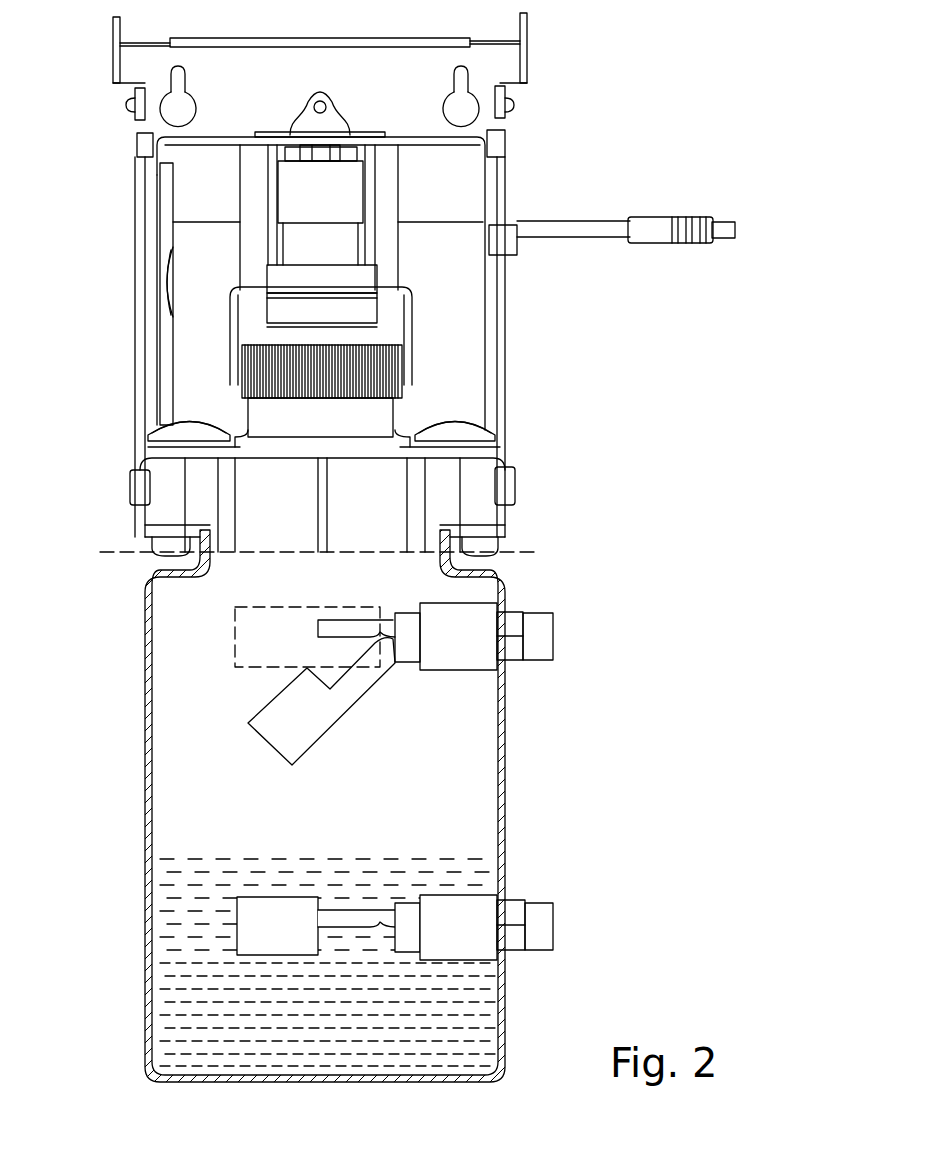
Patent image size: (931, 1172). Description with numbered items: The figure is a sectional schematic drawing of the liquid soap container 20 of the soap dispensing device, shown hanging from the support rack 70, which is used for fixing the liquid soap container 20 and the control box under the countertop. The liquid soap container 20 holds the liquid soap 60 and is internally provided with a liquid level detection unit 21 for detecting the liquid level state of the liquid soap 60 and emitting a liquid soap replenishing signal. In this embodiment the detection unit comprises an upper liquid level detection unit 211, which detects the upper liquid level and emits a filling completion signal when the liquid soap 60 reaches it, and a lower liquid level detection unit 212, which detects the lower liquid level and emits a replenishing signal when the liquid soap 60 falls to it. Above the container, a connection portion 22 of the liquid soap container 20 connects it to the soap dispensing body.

The support rack 70 is at (488, 70).
The connection portion 22 is at (385, 377).
The liquid level detection unit 21 is at (425, 656).
The upper liquid level detection unit 211 is at (475, 655).
The liquid soap container 20 is at (503, 812).
The lower liquid level detection unit 212 is at (543, 927).
The liquid soap 60 is at (467, 1028).